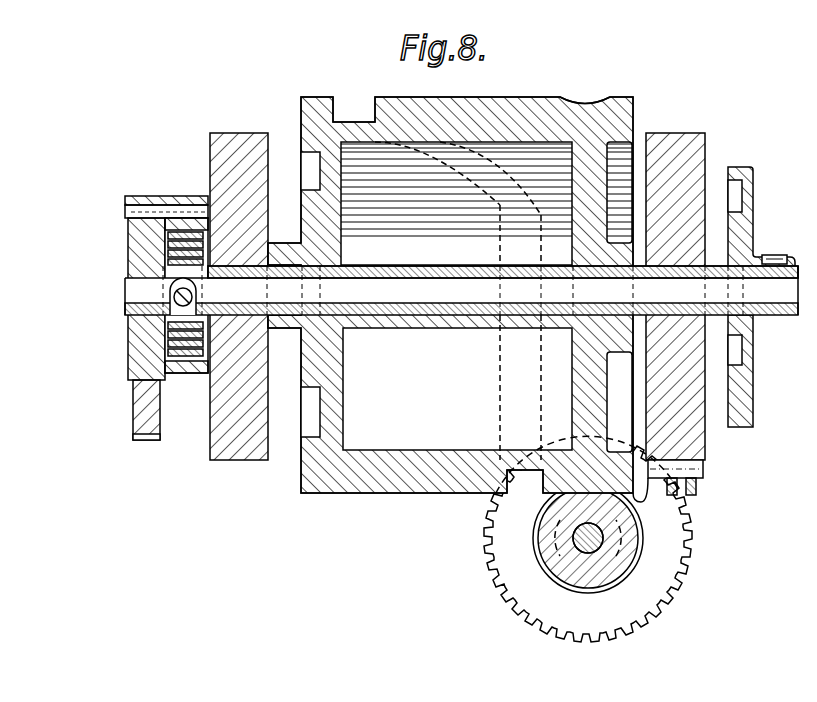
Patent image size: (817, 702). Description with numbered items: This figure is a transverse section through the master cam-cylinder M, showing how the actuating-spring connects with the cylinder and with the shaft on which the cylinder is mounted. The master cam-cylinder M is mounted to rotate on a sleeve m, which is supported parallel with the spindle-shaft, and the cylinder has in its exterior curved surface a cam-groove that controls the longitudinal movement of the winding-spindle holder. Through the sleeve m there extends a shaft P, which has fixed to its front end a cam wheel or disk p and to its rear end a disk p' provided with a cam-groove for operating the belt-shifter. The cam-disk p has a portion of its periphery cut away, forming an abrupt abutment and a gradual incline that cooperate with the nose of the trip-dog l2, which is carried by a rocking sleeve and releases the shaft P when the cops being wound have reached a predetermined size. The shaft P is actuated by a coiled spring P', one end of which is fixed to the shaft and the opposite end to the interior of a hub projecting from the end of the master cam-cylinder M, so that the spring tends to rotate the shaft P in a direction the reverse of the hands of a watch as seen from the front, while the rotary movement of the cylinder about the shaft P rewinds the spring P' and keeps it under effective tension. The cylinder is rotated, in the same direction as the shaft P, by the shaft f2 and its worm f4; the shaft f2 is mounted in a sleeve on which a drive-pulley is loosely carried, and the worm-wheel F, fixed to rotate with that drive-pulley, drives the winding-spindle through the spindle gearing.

The shaft P is at (461, 290).
The coiled spring P' is at (128, 295).
The cam wheel or disk p is at (146, 288).
The disk p' is at (761, 313).
The trip-dog l2 is at (137, 441).
The sleeve m is at (367, 265).
The master cam-cylinder M is at (458, 299).
The worm-wheel F is at (588, 538).
The shaft f2 is at (601, 537).
The worm f4 is at (596, 564).